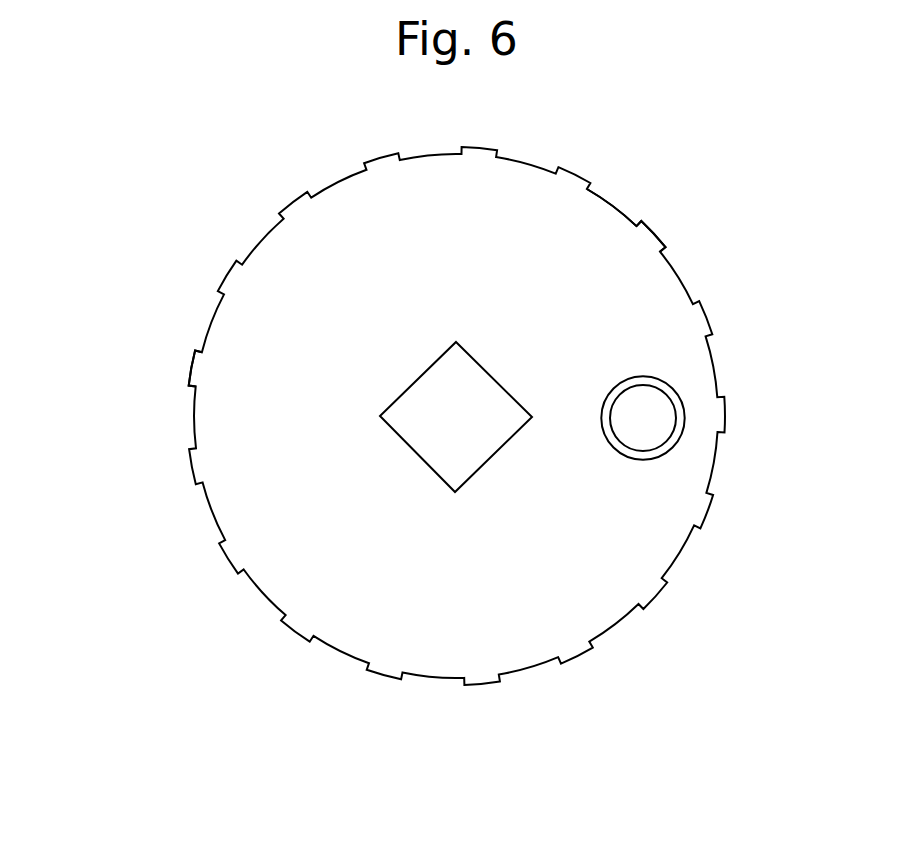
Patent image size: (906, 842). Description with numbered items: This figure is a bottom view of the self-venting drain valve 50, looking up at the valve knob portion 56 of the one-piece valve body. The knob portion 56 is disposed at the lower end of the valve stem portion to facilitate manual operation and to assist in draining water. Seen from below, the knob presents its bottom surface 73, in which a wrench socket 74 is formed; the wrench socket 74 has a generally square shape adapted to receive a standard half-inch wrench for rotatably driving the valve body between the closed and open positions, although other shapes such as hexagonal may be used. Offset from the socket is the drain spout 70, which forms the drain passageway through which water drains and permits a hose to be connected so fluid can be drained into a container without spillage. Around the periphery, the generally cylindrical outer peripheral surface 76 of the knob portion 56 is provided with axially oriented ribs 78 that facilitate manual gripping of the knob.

The self-venting drain valve 50 is at (125, 350).
The valve knob portion 56 is at (195, 415).
The drain spout 70 is at (636, 376).
The bottom surface 73 is at (633, 553).
The wrench socket 74 is at (429, 445).
The outer peripheral surface 76 is at (608, 202).
The axially oriented ribs 78 is at (662, 242).